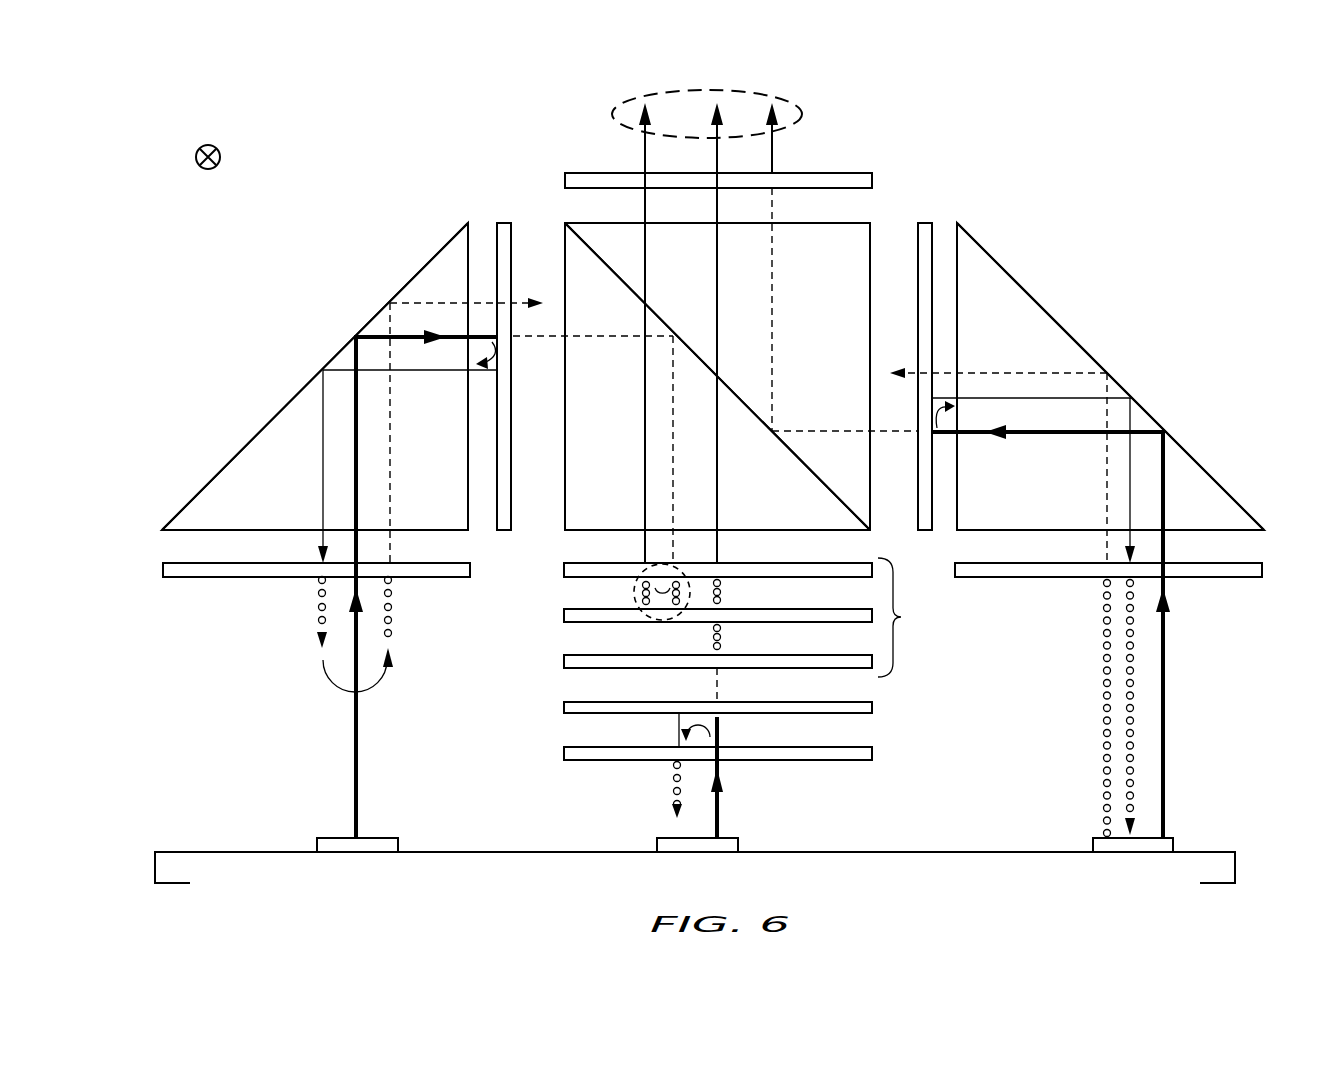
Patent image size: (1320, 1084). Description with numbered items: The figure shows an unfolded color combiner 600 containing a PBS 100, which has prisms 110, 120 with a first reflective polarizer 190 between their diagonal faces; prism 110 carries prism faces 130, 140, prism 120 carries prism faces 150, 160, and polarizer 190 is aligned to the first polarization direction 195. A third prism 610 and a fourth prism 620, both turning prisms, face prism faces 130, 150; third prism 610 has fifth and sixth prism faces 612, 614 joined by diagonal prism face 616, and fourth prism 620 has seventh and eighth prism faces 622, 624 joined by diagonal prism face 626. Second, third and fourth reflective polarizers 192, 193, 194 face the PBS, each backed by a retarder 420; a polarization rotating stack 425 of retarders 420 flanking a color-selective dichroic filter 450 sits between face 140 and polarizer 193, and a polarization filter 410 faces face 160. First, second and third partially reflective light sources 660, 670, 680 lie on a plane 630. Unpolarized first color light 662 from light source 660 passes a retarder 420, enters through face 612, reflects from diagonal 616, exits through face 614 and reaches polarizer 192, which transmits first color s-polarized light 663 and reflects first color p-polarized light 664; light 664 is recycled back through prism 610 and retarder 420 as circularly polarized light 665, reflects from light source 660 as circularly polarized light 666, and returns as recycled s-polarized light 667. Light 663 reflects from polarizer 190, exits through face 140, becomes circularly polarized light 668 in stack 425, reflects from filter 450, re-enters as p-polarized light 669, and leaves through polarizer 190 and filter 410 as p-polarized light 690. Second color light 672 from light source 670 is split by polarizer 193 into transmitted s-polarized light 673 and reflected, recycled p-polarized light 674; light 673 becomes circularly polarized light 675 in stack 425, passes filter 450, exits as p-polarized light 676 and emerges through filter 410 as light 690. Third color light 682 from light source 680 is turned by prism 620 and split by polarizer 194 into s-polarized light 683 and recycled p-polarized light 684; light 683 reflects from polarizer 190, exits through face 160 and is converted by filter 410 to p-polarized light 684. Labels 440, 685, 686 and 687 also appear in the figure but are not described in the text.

The PBS 100 is at (554, 216).
The prism 110 is at (562, 532).
The prism 120 is at (871, 223).
The first prism face 130 is at (563, 520).
The second prism face 140 is at (568, 533).
The third prism face 150 is at (873, 233).
The fourth prism face 160 is at (860, 223).
The first reflective polarizer 190 is at (587, 243).
The second reflective polarizer 192 is at (500, 222).
The third reflective polarizer 193 is at (562, 707).
The fourth reflective polarizer 194 is at (927, 532).
The first polarization direction 195 is at (208, 169).
The polarization filter 410 is at (872, 173).
The retarder 420 is at (185, 578).
The polarization rotating stack 425 is at (908, 617).
The coating 440 is at (865, 190).
The color-selective dichroic filter 450 is at (562, 615).
The unfolded color combiner 600 is at (452, 106).
The third prism 610 is at (218, 468).
The fifth prism face 612 is at (178, 530).
The sixth prism face 614 is at (470, 233).
The diagonal prism face 616 is at (267, 447).
The fourth prism 620 is at (1023, 315).
The seventh prism face 622 is at (1248, 537).
The eighth prism face 624 is at (957, 235).
The diagonal prism face 626 is at (1000, 260).
The plane 630 is at (155, 865).
The first light source 660 is at (400, 848).
The first color light 662 is at (355, 718).
The transmitted first color s-polarized light 663 is at (542, 337).
The reflected first color p-polarized light 664 is at (486, 365).
The circularly polarized first color light 665 is at (315, 607).
The circularly polarized first color light 666 is at (392, 603).
The recycled first color s-polarized light 667 is at (478, 302).
The first color circularly polarized light 668 is at (632, 605).
The first color p-polarized light 669 is at (645, 443).
The second light source 670 is at (740, 848).
The second color light 672 is at (720, 800).
The transmitted second color s-polarized light 673 is at (720, 690).
The reflected second color p-polarized light 674 is at (678, 730).
The second color circularly polarized light 675 is at (725, 638).
The second color p-polarized light 676 is at (718, 490).
The third light source 680 is at (1175, 848).
The third color light 682 is at (1165, 730).
The transmitted third color s-polarized light 683 is at (893, 433).
The third color p-polarized light 684 is at (773, 150).
The recycled light 685 is at (1133, 658).
The recycled light 686 is at (1103, 668).
The transmitted beam 687 is at (940, 373).
The p-polarized light 690 is at (792, 105).